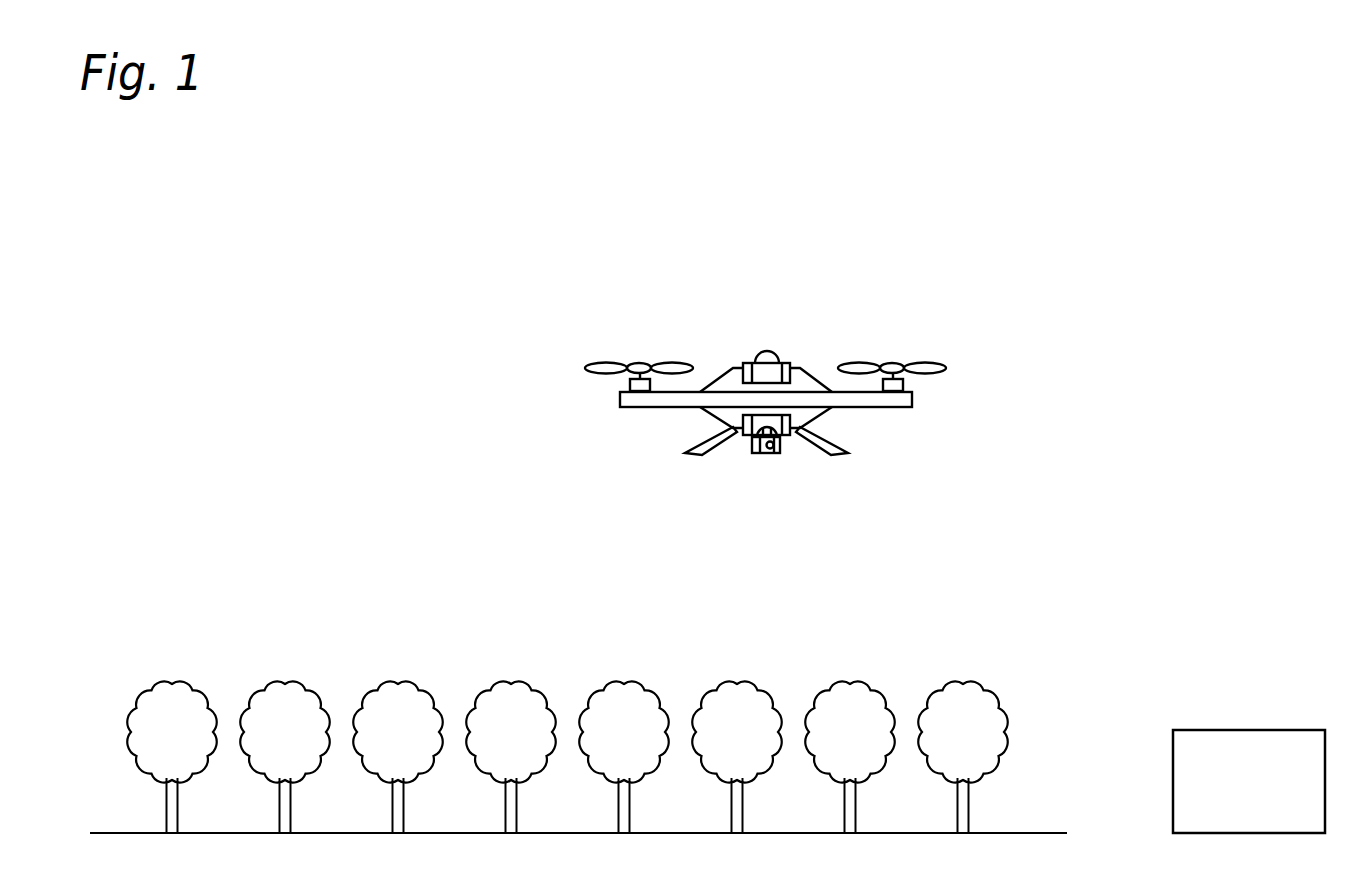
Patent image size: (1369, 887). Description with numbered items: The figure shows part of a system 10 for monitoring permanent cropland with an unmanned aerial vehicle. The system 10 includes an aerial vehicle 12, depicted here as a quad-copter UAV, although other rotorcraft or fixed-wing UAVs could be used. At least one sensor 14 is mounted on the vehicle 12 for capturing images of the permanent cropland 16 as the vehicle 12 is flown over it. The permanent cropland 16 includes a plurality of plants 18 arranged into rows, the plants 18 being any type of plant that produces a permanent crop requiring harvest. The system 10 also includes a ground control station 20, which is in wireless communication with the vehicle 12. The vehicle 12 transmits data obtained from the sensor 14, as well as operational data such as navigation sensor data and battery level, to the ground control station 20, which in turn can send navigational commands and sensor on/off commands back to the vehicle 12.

The system 10 is at (452, 288).
The aerial vehicle 12 is at (800, 368).
The sensor 14 is at (782, 455).
The permanent cropland 16 is at (1043, 727).
The plants 18 is at (517, 680).
The ground control station 20 is at (1275, 728).